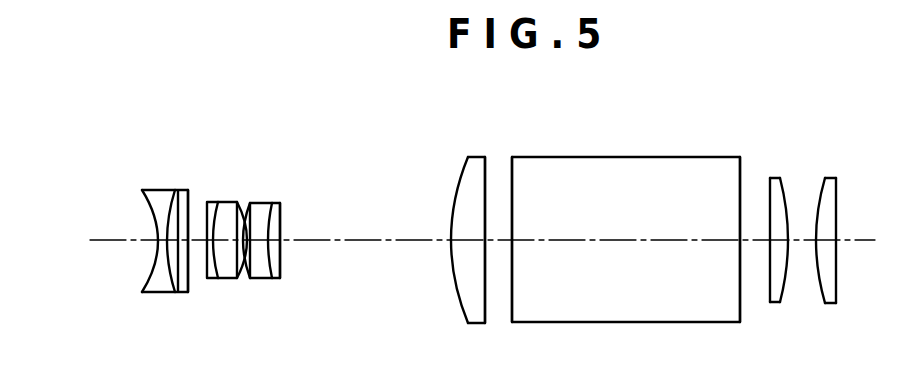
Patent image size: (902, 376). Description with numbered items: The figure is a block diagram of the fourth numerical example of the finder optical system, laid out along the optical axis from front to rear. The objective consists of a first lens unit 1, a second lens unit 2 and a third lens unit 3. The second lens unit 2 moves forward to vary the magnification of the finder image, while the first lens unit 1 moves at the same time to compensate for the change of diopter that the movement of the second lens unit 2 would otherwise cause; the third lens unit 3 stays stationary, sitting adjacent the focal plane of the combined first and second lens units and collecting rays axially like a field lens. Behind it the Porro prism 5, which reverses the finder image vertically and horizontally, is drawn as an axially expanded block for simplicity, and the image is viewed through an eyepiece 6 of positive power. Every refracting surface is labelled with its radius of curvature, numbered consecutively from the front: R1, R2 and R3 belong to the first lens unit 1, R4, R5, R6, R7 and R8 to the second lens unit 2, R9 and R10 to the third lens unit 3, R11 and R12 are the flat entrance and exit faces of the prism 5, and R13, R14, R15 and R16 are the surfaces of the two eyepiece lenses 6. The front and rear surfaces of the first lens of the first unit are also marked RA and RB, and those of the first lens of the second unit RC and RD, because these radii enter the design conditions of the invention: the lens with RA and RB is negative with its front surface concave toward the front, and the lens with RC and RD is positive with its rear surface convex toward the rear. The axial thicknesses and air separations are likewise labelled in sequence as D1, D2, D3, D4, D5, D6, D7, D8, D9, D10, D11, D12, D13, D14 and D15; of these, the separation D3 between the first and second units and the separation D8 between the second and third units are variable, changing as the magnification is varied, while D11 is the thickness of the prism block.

The first lens unit 1 is at (187, 101).
The second lens unit 2 is at (345, 101).
The third lens unit 3 is at (488, 101).
The Porro prism 5 is at (742, 101).
The eyepiece 6 is at (882, 101).
The first surface radius of curvature R1 is at (143, 191).
The second surface radius of curvature R2 is at (163, 190).
The third surface radius of curvature R3 is at (192, 190).
The fourth surface radius of curvature R4 is at (205, 202).
The fifth surface radius of curvature R5 is at (231, 204).
The sixth surface radius of curvature R6 is at (252, 205).
The seventh surface radius of curvature R7 is at (274, 205).
The eighth surface radius of curvature R8 is at (282, 208).
The ninth surface radius of curvature R9 is at (458, 182).
The tenth surface radius of curvature R10 is at (488, 168).
The eleventh surface radius of curvature R11 is at (506, 170).
The twelfth surface radius of curvature R12 is at (740, 178).
The thirteenth surface radius of curvature R13 is at (763, 185).
The fourteenth surface radius of curvature R14 is at (784, 184).
The fifteenth surface radius of curvature R15 is at (817, 184).
The sixteenth surface radius of curvature R16 is at (837, 190).
The front surface radius of first lens of first unit RA is at (109, 144).
The rear surface radius of first lens of first unit RB is at (180, 144).
The front surface radius of first lens of second unit RC is at (212, 144).
The rear surface radius of first lens of second unit RD is at (279, 144).
The first axial thickness D1 is at (160, 293).
The second axial thickness D2 is at (183, 293).
The third air separation D3 is at (197, 242).
The fourth axial thickness D4 is at (222, 242).
The fifth axial thickness D5 is at (247, 242).
The sixth air separation D6 is at (265, 242).
The seventh axial thickness D7 is at (285, 242).
The eighth air separation D8 is at (367, 242).
The ninth axial thickness D9 is at (468, 242).
The tenth air separation D10 is at (495, 242).
The eleventh axial thickness D11 is at (625, 242).
The twelfth air separation D12 is at (752, 242).
The thirteenth axial thickness D13 is at (777, 242).
The fourteenth air separation D14 is at (805, 242).
The fifteenth axial thickness D15 is at (827, 242).